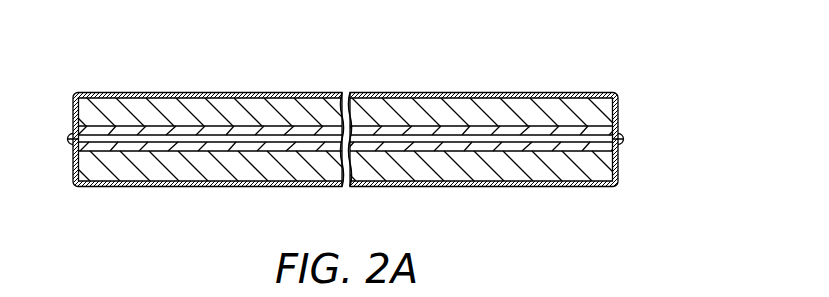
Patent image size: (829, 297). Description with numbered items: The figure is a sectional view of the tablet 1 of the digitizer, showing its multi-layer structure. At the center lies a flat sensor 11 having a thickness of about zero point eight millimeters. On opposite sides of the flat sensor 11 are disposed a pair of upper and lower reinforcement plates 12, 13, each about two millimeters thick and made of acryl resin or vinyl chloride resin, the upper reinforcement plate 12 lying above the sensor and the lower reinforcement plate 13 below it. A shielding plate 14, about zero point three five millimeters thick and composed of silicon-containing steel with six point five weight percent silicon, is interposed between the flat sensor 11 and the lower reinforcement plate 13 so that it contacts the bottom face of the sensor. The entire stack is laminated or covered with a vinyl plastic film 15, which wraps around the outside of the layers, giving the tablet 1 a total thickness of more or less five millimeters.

The tablet 1 is at (375, 86).
The flat sensor 11 is at (552, 130).
The upper reinforcement plate 12 is at (460, 100).
The lower reinforcement plate 13 is at (470, 170).
The shielding plate 14 is at (173, 147).
The vinyl plastic film 15 is at (137, 93).